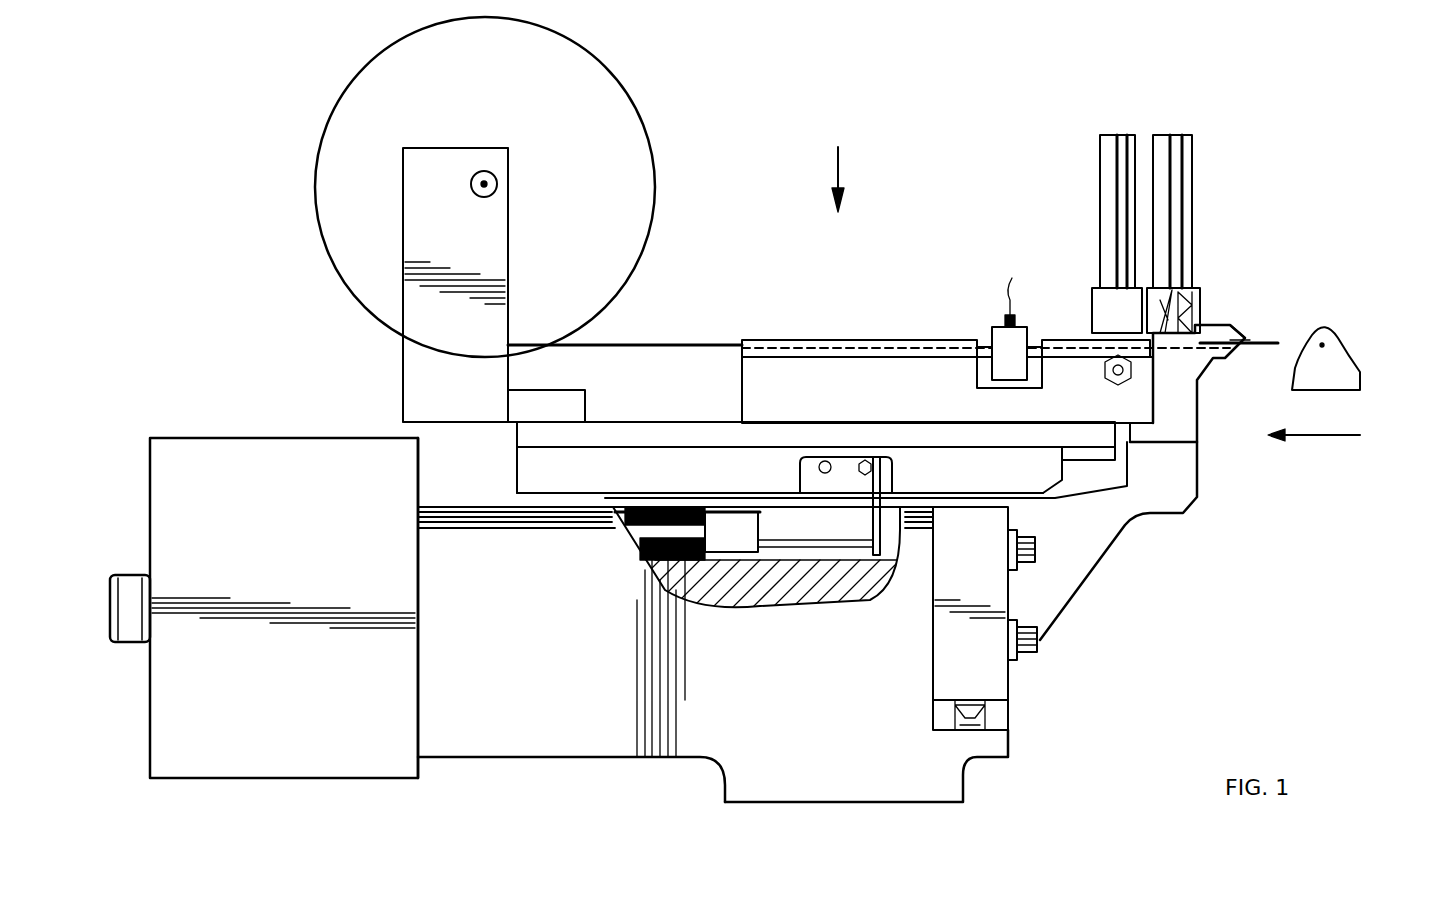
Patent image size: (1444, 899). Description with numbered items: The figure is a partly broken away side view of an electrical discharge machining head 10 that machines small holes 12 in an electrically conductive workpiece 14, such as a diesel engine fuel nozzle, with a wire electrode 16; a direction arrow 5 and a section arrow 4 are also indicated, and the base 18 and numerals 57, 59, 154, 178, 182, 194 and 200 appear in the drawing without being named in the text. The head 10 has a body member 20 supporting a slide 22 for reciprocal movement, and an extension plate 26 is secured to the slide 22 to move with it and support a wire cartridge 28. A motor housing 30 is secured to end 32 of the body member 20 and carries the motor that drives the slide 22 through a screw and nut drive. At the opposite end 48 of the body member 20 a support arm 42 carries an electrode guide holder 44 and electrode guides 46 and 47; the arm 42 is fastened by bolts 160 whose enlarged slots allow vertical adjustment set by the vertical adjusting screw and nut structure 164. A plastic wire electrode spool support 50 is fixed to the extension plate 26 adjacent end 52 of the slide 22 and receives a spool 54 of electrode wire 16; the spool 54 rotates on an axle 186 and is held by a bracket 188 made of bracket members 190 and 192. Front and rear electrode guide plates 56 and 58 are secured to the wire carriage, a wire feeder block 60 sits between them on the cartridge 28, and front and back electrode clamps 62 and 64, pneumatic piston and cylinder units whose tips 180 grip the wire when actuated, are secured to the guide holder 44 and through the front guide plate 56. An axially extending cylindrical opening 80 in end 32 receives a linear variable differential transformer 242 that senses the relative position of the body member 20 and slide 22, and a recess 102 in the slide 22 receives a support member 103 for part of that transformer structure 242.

The section line arrow 4 is at (840, 175).
The direction arrow 5 is at (1318, 442).
The electrical discharge machining head 10 is at (640, 757).
The small holes 12 is at (1324, 343).
The workpiece 14 is at (1362, 375).
The wire electrode 16 is at (1265, 342).
The base 18 is at (860, 802).
The body member 20 is at (448, 760).
The slide 22 is at (925, 447).
The extension plate 26 is at (517, 438).
The wire cartridge 28 is at (922, 348).
The motor housing 30 is at (285, 778).
The end of body member 32 is at (418, 578).
The support arm 42 is at (1165, 522).
The electrode guide holder 44 is at (1200, 415).
The electrode guide 46 is at (1210, 324).
The electrode guide 47 is at (1240, 360).
The opposite end of body member 48 is at (940, 560).
The wire electrode spool support 50 is at (403, 374).
The end of slide 52 is at (517, 476).
The spool 54 is at (605, 60).
The front electrode guide plate 56 is at (1085, 364).
The guide rail section 57 is at (1068, 342).
The rear electrode guide plate 58 is at (792, 340).
The guide strip 59 is at (855, 340).
The wire feeder block 60 is at (1009, 321).
The front electrode clamp 62 is at (1175, 135).
The back electrode clamp 64 is at (1112, 135).
The cylindrical opening 80 is at (640, 507).
The recess 102 is at (840, 460).
The support member 103 is at (873, 524).
The guide block 154 is at (742, 380).
The bolts 160 is at (1040, 642).
The vertical adjusting screw and nut structure 164 is at (1010, 705).
The wire guide 178 is at (1240, 336).
The tips 180 is at (1180, 290).
The spring 182 is at (1195, 300).
The axle 186 is at (484, 170).
The bracket 188 is at (508, 268).
The bracket member 190 is at (585, 392).
The bracket member 192 is at (508, 212).
The pivot hole 194 is at (500, 178).
The adjustment knob 200 is at (125, 575).
The linear variable differential transformer 242 is at (645, 558).